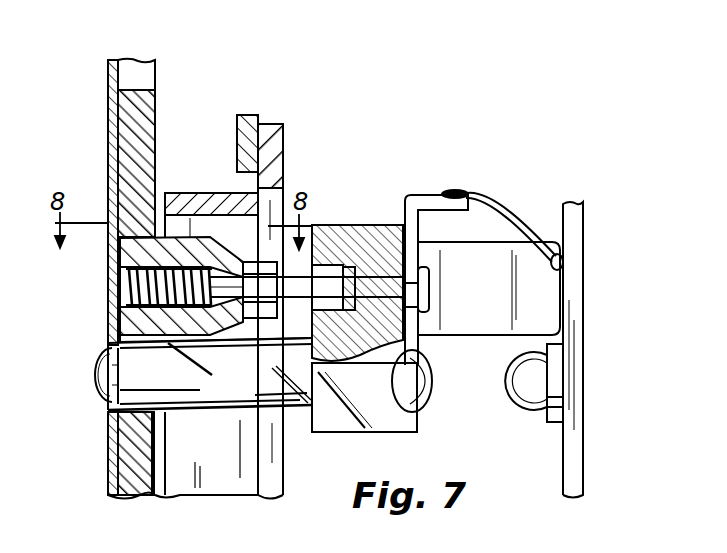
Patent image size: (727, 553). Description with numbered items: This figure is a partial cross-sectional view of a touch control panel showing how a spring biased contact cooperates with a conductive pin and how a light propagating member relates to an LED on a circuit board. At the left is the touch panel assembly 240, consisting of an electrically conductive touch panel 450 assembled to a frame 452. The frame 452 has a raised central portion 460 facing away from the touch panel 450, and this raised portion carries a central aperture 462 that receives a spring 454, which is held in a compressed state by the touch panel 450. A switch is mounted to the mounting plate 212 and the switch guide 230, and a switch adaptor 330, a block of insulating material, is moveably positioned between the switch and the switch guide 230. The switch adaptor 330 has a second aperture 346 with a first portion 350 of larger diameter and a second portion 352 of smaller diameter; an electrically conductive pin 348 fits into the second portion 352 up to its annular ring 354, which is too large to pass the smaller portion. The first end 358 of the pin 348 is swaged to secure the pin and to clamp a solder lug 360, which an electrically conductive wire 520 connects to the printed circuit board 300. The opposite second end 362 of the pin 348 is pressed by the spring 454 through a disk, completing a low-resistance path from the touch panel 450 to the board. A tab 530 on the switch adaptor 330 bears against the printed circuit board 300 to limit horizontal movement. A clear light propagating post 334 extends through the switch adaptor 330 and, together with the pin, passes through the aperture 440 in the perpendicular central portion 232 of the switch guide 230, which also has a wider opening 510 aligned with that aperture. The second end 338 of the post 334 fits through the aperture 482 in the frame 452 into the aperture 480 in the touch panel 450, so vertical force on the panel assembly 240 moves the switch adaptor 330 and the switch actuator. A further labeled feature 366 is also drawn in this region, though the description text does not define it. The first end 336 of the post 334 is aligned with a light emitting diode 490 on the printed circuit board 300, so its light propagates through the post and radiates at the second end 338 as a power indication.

The touch panel assembly 240 is at (136, 255).
The frame 452 is at (150, 100).
The touch panel 450 is at (108, 128).
The mounting plate 212 is at (240, 140).
The switch guide 230 is at (283, 128).
The opening 510 is at (280, 480).
The perpendicular central portion 232 is at (200, 194).
The aperture 440 is at (122, 250).
The spring 454 is at (120, 300).
The central aperture 462 is at (112, 334).
The second end 362 is at (250, 262).
The electrically conductive pin 348 is at (222, 336).
The second aperture 346 is at (357, 265).
The annular ring 354 is at (375, 230).
The first portion 350 is at (354, 344).
The switch adaptor 330 is at (392, 228).
The solder lug 360 is at (443, 194).
The electrically conductive wire 520 is at (505, 215).
The printed circuit board 300 is at (572, 223).
The first end 358 is at (429, 278).
The second portion 352 is at (428, 302).
The tab 530 is at (550, 296).
The first end 336 is at (433, 372).
The post 334 is at (302, 425).
The light emitting diode 490 is at (522, 410).
The aperture 480 is at (172, 398).
The guide 366 is at (215, 384).
The raised central portion 460 is at (174, 369).
The aperture 482 is at (160, 412).
The second end 338 is at (103, 380).